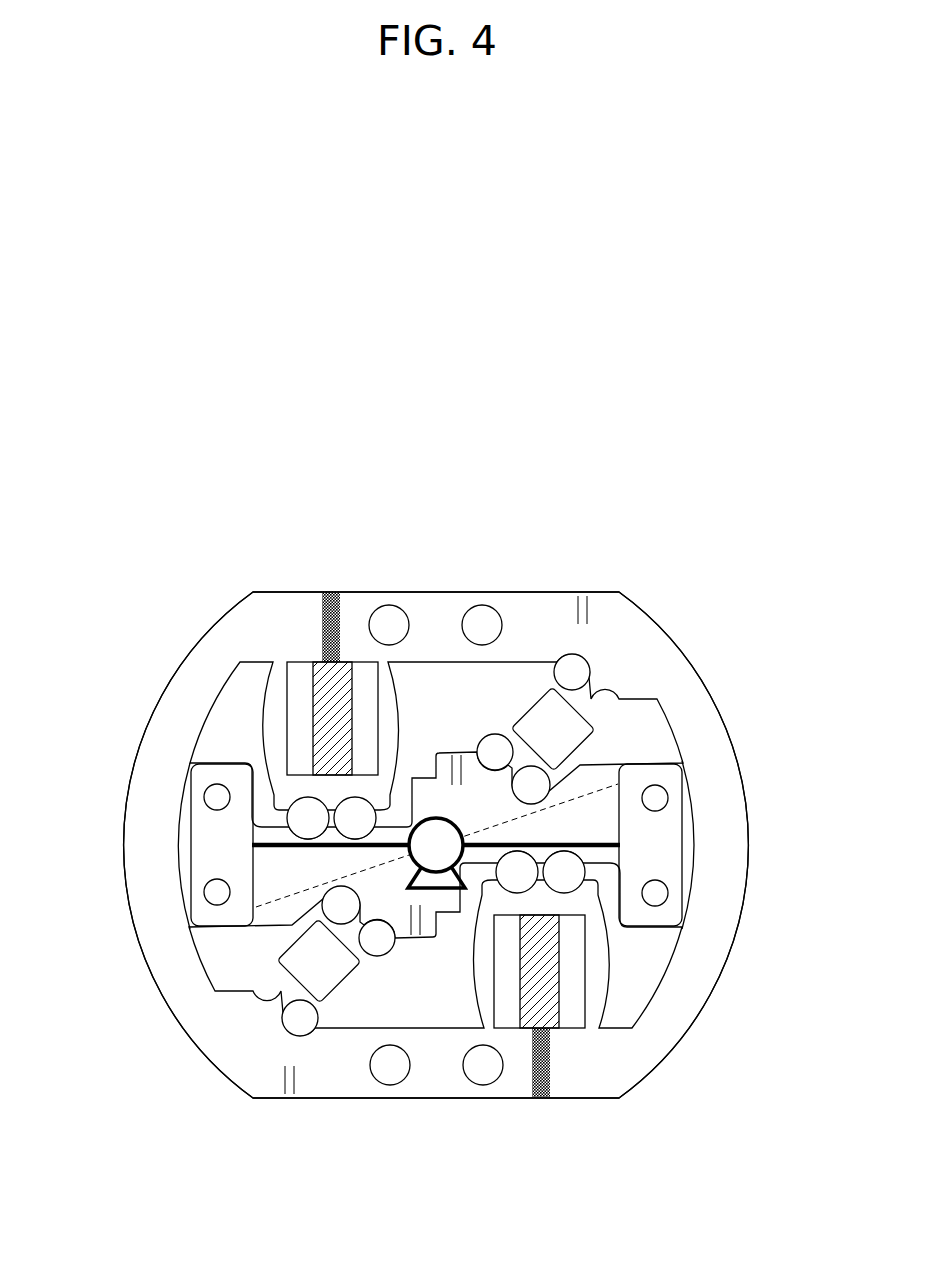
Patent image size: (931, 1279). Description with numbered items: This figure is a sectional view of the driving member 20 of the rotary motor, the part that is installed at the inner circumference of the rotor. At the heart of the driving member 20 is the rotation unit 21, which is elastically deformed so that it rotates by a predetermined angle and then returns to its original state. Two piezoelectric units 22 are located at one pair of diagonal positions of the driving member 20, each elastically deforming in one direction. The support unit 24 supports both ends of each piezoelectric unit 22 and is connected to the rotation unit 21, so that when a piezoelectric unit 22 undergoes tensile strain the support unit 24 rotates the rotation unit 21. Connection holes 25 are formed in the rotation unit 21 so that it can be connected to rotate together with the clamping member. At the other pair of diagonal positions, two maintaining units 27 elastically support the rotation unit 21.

The driving member 20 is at (672, 593).
The rotation unit 21 is at (602, 762).
The piezoelectric unit 22 is at (342, 690).
The support unit 24 is at (285, 792).
The connection hole 25 is at (667, 893).
The maintaining unit 27 is at (531, 703).